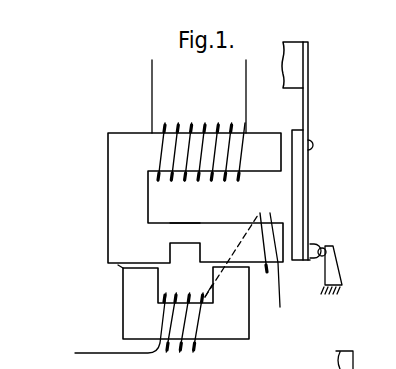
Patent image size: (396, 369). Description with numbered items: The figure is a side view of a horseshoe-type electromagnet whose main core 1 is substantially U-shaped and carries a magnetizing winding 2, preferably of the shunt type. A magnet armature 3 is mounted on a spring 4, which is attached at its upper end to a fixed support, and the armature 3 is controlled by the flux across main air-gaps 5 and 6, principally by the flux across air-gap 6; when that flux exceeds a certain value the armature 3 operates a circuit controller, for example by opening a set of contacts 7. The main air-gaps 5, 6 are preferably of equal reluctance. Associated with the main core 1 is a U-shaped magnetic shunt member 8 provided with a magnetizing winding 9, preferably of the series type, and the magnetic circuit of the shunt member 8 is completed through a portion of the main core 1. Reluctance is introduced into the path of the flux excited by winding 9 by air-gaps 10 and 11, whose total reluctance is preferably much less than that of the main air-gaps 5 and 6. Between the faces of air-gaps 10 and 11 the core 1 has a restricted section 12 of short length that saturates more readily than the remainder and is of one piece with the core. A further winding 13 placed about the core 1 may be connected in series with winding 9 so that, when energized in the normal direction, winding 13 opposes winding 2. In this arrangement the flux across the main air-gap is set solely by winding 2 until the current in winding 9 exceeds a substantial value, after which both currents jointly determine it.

The main core 1 is at (108, 188).
The magnetizing winding 2 is at (190, 133).
The magnet armature 3 is at (308, 205).
The spring 4 is at (309, 107).
The main air-gap 5 is at (291, 131).
The main air-gap 6 is at (290, 258).
The contacts 7 is at (327, 246).
The magnetic shunt member 8 is at (123, 316).
The magnetizing winding 9 is at (173, 342).
The air-gap 10 is at (118, 266).
The air-gap 11 is at (248, 263).
The restricted section 12 is at (185, 228).
The winding 13 is at (261, 217).